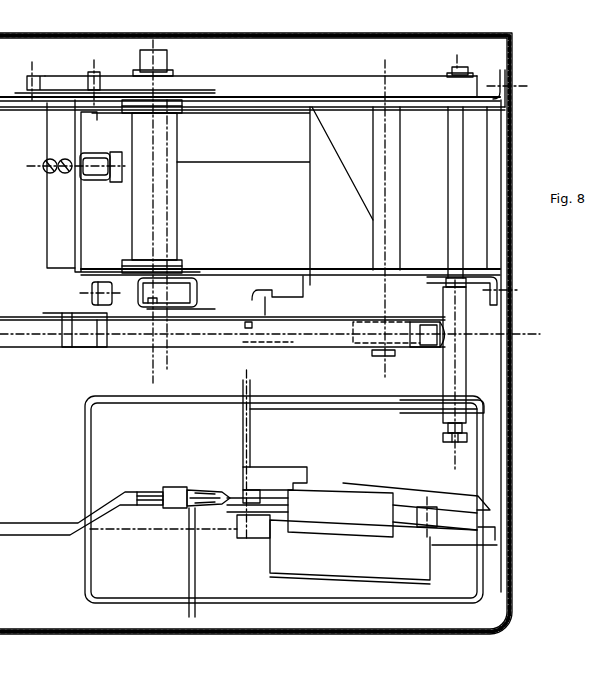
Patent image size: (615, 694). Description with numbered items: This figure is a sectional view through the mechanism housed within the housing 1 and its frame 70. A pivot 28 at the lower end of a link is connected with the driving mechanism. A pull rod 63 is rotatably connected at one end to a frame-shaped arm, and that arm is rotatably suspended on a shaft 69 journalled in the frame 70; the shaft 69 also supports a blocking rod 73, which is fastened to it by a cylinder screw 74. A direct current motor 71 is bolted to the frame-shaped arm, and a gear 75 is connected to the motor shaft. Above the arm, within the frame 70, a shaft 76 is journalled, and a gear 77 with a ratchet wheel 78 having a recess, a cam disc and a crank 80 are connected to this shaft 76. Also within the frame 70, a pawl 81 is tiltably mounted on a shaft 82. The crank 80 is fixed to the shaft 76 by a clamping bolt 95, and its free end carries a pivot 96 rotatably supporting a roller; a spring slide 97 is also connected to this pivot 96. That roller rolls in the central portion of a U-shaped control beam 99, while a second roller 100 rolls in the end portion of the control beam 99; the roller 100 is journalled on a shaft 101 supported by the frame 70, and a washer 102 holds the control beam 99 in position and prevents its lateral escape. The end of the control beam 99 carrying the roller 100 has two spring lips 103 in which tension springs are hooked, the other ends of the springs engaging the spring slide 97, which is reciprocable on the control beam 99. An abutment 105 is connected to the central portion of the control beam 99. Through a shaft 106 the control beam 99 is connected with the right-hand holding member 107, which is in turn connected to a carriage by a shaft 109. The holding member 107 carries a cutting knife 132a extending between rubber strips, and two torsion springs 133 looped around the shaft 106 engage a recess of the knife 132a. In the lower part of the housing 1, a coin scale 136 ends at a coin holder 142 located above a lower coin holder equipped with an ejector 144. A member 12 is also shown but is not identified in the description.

The housing 1 is at (510, 345).
The housing side plate 12 is at (503, 472).
The pivot 28 is at (163, 60).
The pull rod 63 is at (100, 186).
The shaft 69 is at (447, 375).
The frame 70 is at (322, 275).
The direct current motor 71 is at (275, 303).
The blocking rod 73 is at (252, 443).
The cylinder screw 74 is at (445, 437).
The gear 75 is at (112, 76).
The shaft 76 is at (163, 218).
The gear 77 is at (53, 78).
The ratchet wheel 78 is at (57, 93).
The crank 80 is at (207, 288).
The pawl 81 is at (328, 82).
The shaft 82 is at (455, 138).
The clamping bolt 95 is at (92, 296).
The pivot 96 is at (207, 312).
The spring slide 97 is at (82, 337).
The U-shaped control beam 99 is at (245, 335).
The second roller 100 is at (357, 340).
The shaft 101 is at (390, 190).
The washer 102 is at (402, 350).
The spring lips 103 is at (450, 333).
The abutment 105 is at (247, 325).
The shaft 106 is at (13, 240).
The right-hand holding member 107 is at (13, 223).
The shaft 109 is at (8, 388).
The cutting knife 132a is at (21, 287).
The torsion springs 133 is at (13, 262).
The coin scale 136 is at (12, 527).
The coin holder 142 is at (170, 493).
The ejector 144 is at (200, 563).